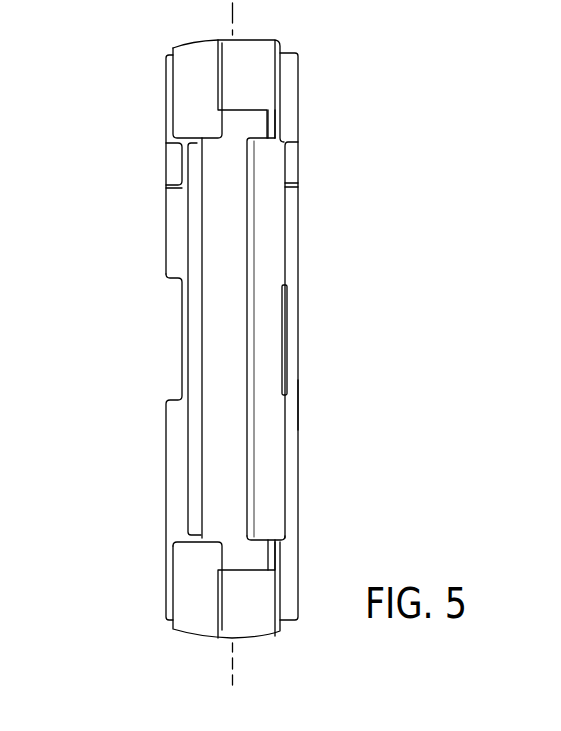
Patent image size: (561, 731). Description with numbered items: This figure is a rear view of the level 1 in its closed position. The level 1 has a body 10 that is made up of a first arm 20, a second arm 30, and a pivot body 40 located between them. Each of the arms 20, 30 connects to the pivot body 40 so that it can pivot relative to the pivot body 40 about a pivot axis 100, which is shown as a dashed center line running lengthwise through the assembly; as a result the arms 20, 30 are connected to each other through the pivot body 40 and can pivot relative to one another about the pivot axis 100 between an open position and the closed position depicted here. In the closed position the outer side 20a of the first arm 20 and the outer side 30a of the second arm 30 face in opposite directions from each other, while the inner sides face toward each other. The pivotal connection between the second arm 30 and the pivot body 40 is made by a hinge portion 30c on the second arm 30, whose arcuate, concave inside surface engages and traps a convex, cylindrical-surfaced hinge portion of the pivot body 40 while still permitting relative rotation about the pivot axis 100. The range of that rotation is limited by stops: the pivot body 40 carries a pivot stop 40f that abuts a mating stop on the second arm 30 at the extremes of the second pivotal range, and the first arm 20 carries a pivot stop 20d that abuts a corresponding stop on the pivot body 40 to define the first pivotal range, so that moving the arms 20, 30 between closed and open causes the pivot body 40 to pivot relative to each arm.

The level 1 is at (212, 347).
The body 10 is at (104, 62).
The first arm 20 is at (298, 323).
The outer side of first arm 20a is at (300, 409).
The pivot stop 20d is at (193, 255).
The second arm 30 is at (177, 223).
The outer side of second arm 30a is at (166, 423).
The hinge portion 30c is at (188, 620).
The pivot body 40 is at (217, 495).
The pivot stop 40f is at (272, 123).
The pivot axis 100 is at (235, 663).